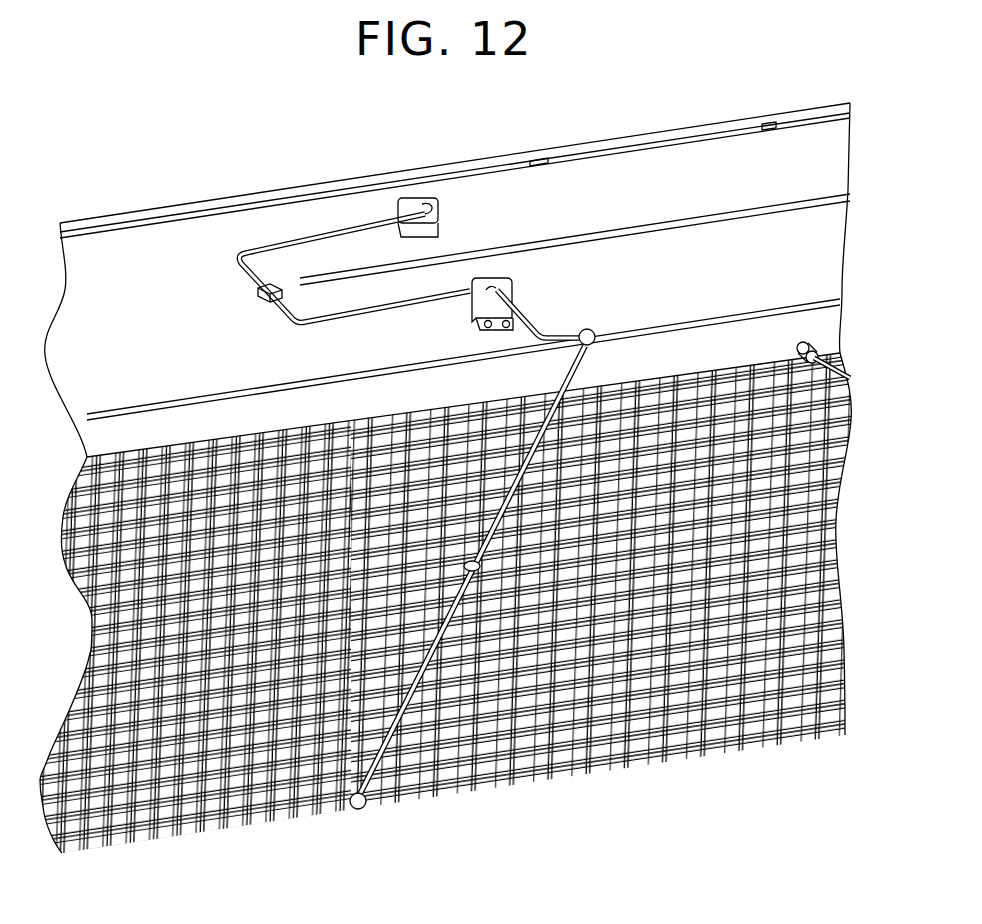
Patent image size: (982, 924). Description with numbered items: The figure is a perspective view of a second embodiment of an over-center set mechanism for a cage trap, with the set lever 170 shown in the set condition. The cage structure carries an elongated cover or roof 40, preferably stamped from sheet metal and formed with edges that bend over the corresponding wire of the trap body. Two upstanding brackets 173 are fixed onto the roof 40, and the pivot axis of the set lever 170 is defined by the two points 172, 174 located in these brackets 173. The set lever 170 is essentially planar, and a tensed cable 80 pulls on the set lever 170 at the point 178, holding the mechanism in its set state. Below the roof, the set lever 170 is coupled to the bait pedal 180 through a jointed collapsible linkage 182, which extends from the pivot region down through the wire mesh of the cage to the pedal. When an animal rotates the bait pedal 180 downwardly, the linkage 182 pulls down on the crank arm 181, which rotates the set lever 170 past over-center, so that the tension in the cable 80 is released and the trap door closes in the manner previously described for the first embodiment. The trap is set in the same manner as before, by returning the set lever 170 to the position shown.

The roof 40 is at (163, 351).
The cable 80 is at (676, 220).
The set lever 170 is at (290, 243).
The pivot point 172 is at (437, 200).
The upstanding brackets 173 is at (410, 205).
The pivot point 174 is at (497, 282).
The cable attachment point 178 is at (262, 284).
The bait pedal 180 is at (340, 760).
The crank arm 181 is at (576, 332).
The jointed collapsible linkage 182 is at (380, 795).